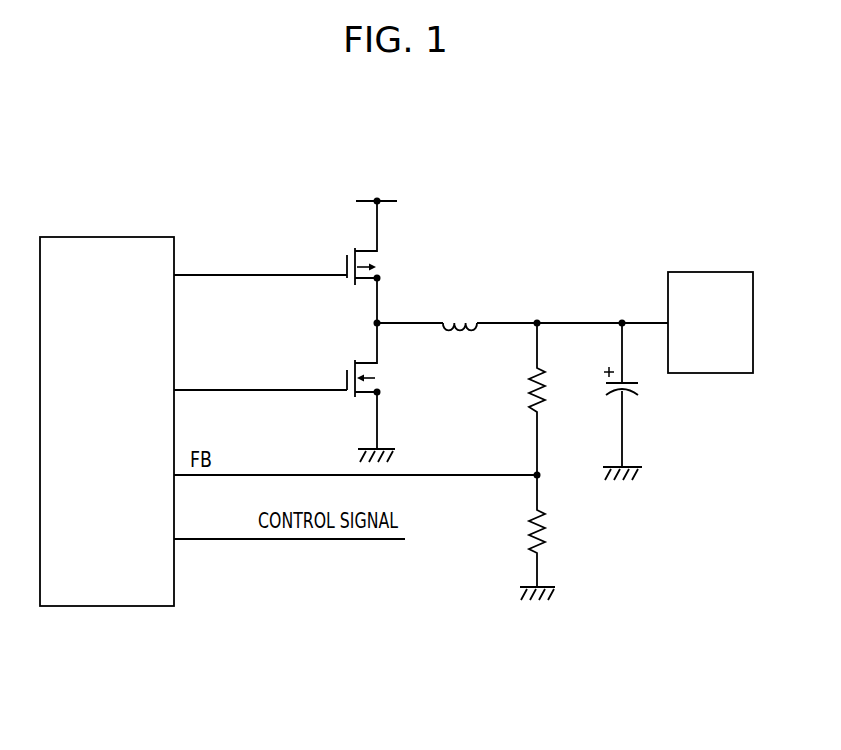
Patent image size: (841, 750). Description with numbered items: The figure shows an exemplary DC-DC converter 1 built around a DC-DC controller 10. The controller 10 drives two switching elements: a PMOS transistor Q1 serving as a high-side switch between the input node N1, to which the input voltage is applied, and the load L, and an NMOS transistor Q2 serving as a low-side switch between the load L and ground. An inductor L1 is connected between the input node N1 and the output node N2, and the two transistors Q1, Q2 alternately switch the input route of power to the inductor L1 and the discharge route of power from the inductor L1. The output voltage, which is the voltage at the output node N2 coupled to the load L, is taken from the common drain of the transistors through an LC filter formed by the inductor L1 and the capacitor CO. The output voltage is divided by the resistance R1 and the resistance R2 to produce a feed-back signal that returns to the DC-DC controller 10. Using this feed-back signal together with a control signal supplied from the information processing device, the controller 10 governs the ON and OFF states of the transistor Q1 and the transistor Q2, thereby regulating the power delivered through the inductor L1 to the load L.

The DC-DC converter 1 is at (394, 655).
The DC-DC controller 10 is at (108, 237).
The input node N1 is at (379, 203).
The PMOS transistor Q1 is at (382, 262).
The NMOS transistor Q2 is at (382, 377).
The inductor L1 is at (463, 318).
The output node N2 is at (540, 320).
The resistance R1 is at (529, 375).
The resistance R2 is at (529, 513).
The capacitor CO is at (625, 400).
The load L is at (710, 272).